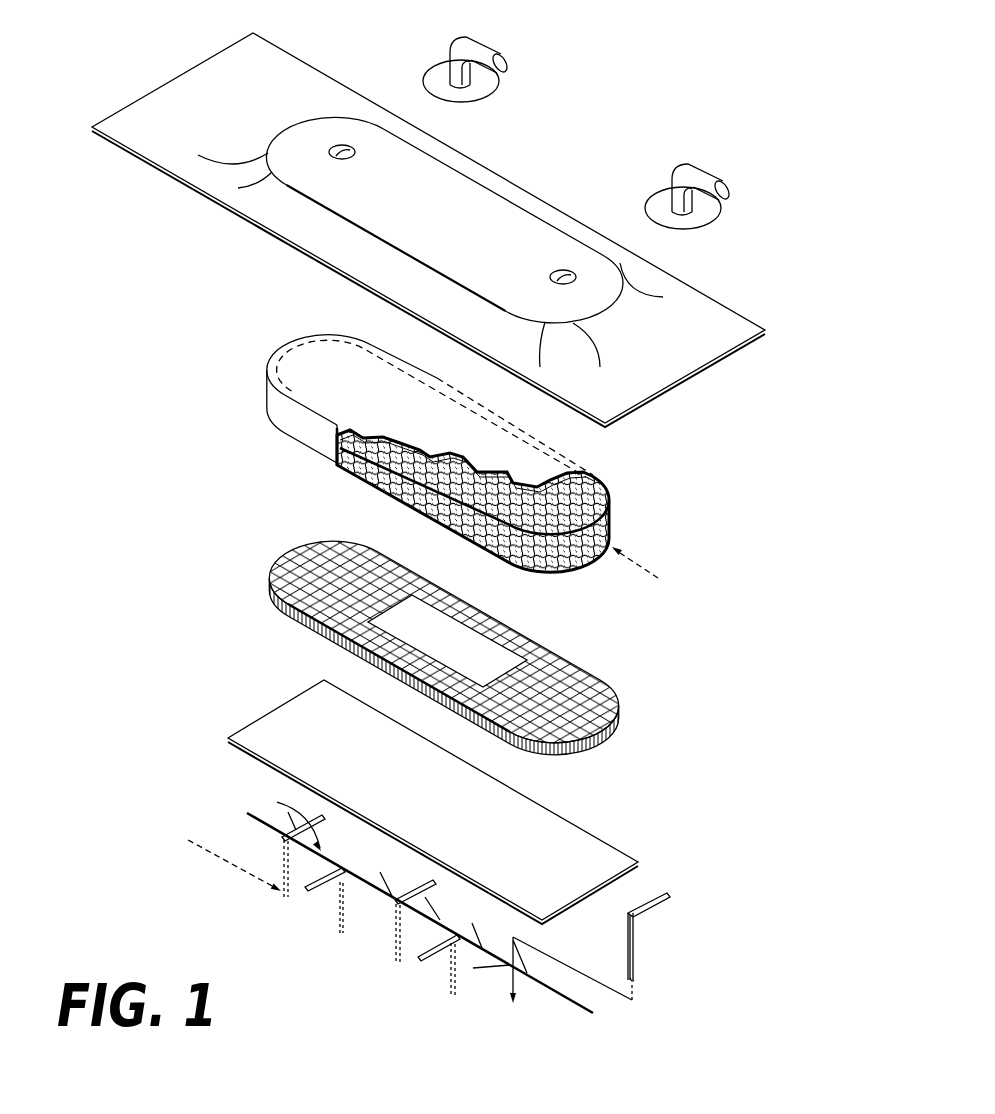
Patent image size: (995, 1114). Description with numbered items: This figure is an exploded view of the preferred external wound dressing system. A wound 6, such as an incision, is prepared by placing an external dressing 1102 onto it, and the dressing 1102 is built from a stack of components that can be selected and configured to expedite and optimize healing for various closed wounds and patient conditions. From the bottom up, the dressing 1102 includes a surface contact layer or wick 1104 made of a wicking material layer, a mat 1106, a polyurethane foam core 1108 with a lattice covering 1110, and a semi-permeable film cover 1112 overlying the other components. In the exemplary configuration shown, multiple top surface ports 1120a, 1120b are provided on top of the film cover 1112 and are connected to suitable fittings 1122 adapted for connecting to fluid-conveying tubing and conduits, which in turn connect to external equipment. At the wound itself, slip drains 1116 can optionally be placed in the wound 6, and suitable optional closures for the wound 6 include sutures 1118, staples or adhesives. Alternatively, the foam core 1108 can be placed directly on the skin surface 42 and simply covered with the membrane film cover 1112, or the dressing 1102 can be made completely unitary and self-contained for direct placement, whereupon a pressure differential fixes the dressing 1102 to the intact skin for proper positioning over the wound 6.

The external dressing 1102 is at (647, 105).
The wick 1104 is at (640, 862).
The mat 1106 is at (622, 700).
The polyurethane foam core 1108 is at (605, 502).
The lattice covering 1110 is at (598, 476).
The semi-permeable film cover 1112 is at (767, 328).
The slip drains 1116 is at (670, 896).
The sutures 1118 is at (387, 913).
The top surface port 1120a is at (460, 110).
The top surface port 1120b is at (682, 238).
The fittings 1122 is at (455, 40).
The wound 6 is at (350, 885).
The skin surface 42 is at (558, 1032).